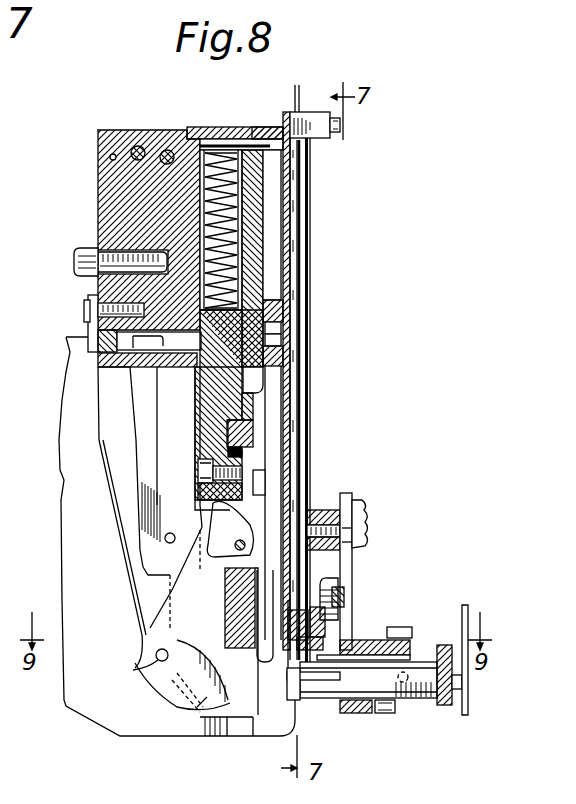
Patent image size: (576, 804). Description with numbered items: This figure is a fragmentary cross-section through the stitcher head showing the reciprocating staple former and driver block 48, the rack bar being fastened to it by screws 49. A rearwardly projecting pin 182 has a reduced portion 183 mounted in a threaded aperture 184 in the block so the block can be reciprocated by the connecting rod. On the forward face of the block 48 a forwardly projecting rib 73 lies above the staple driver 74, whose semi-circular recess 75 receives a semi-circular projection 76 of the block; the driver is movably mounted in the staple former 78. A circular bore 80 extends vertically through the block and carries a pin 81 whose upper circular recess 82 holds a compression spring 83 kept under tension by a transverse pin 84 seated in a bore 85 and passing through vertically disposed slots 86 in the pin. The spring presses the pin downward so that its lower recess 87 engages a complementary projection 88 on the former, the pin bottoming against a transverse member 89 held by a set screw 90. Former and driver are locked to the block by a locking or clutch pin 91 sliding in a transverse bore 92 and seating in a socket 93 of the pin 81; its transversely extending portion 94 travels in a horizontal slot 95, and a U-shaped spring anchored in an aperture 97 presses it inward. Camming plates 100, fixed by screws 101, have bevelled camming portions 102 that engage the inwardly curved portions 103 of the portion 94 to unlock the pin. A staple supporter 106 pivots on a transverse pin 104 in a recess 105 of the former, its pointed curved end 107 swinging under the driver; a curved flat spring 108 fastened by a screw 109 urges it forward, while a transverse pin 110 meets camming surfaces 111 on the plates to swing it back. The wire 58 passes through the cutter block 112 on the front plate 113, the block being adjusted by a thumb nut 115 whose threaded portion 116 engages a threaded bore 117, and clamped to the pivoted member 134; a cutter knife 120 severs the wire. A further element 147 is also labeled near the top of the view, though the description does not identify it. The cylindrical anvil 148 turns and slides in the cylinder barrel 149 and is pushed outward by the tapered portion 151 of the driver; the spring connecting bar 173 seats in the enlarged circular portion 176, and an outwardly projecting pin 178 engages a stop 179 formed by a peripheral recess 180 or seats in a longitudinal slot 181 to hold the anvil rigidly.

The reciprocating driving block 48 is at (118, 197).
The screws 49 is at (167, 150).
The wire 58 is at (298, 110).
The forwardly projecting rib 73 is at (270, 318).
The staple driver 74 is at (280, 378).
The semi-circular recess 75 is at (300, 347).
The semi-circular projection 76 is at (300, 329).
The staple former 78 is at (268, 488).
The circular bore 80 is at (288, 292).
The pin 81 is at (240, 394).
The circular recess 82 is at (267, 232).
The compression spring 83 is at (262, 187).
The transverse pin 84 is at (248, 131).
The bore 85 is at (263, 130).
The vertically disposed slots 86 is at (224, 150).
The recess 87 is at (198, 437).
The complementary projection 88 is at (252, 432).
The transverse member 89 is at (200, 458).
The set screw 90 is at (202, 485).
The locking or clutch pin 91 is at (155, 358).
The transverse bore 92 is at (165, 378).
The socket 93 is at (190, 360).
The transversely extending portion 94 is at (98, 335).
The horizontal slot 95 is at (70, 338).
The aperture 97 is at (110, 157).
The camming plates 100 is at (140, 447).
The screws 101 is at (170, 543).
The bevelled or camming portions 102 is at (130, 376).
The inwardly curved portions 103 is at (90, 316).
The transverse pin 104 is at (230, 590).
The recess 105 is at (230, 608).
The staple supporter 106 is at (155, 683).
The pointed curved end 107 is at (207, 700).
The curved flat spring 108 is at (131, 596).
The screw 109 is at (92, 302).
The transverse pin 110 is at (148, 678).
The camming surfaces 111 is at (175, 698).
The cutter block 112 is at (318, 510).
The front plate 113 is at (300, 247).
The thumb nut 115 is at (364, 513).
The threaded portion 116 is at (342, 530).
The threaded bore 117 is at (342, 543).
The cutter knife 120 is at (323, 640).
The pivoted member 134 is at (352, 571).
The nut 147 is at (343, 126).
The anvil 148 is at (422, 699).
The cylinder barrel 149 is at (388, 627).
The tapered portion 151 is at (270, 655).
The spring connecting bar 173 is at (464, 607).
The enlarged circular portion 176 is at (447, 712).
The outwardly projecting pin 178 is at (400, 675).
The stop 179 is at (410, 668).
The peripheral recess 180 is at (391, 705).
The longitudinal slot 181 is at (367, 714).
The rearwardly projecting pin 182 is at (82, 256).
The reduced portion 183 is at (118, 252).
The threaded aperture 184 is at (122, 253).